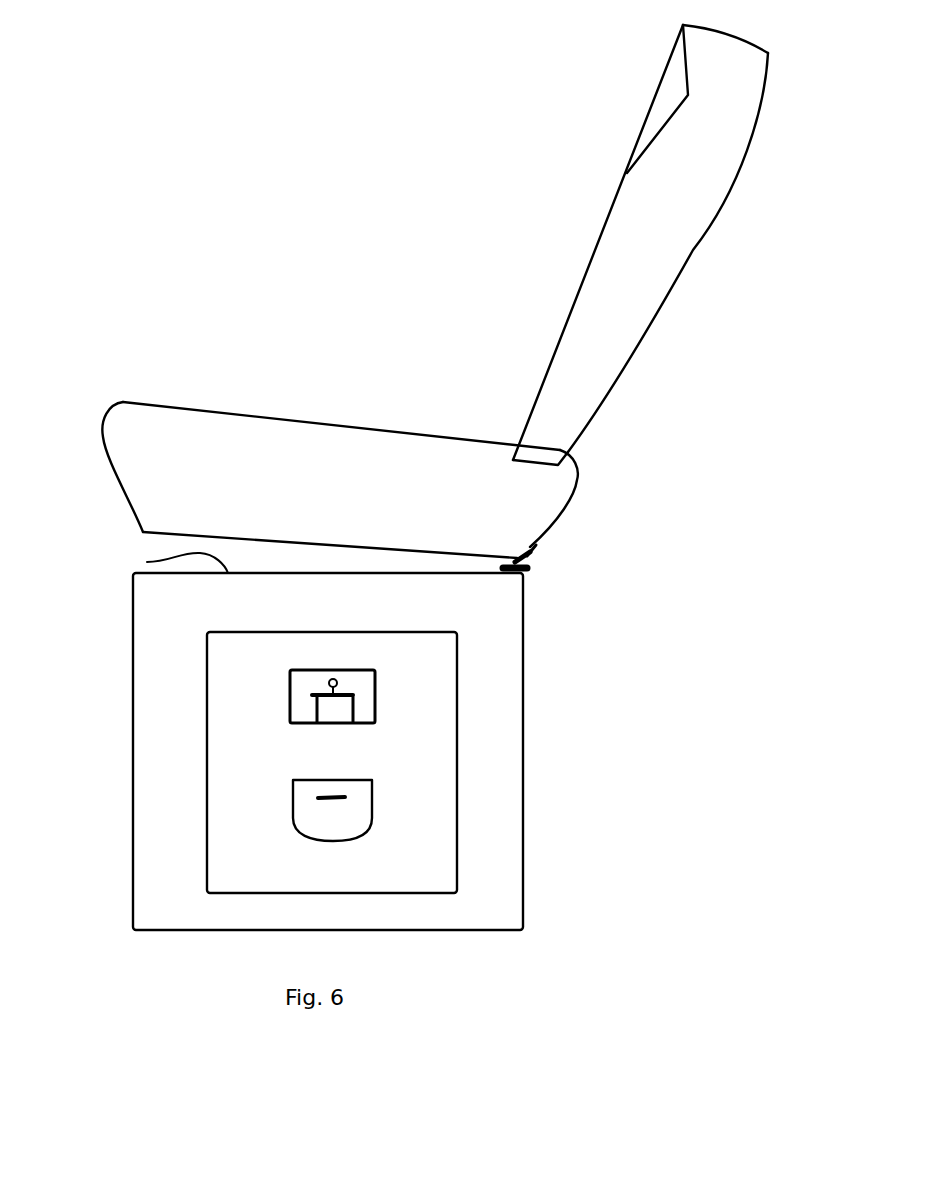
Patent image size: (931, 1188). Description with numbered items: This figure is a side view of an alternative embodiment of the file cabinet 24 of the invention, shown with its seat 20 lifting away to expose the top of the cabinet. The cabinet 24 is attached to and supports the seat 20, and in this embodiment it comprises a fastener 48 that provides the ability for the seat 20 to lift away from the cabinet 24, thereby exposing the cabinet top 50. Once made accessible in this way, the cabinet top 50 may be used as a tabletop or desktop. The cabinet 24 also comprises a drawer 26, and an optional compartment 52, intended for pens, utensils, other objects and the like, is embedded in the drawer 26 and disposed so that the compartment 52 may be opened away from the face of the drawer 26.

The seat 20 is at (320, 455).
The cabinet 24 is at (738, 678).
The drawer 26 is at (235, 797).
The fastener 48 is at (530, 555).
The cabinet top 50 is at (147, 562).
The compartment 52 is at (362, 813).